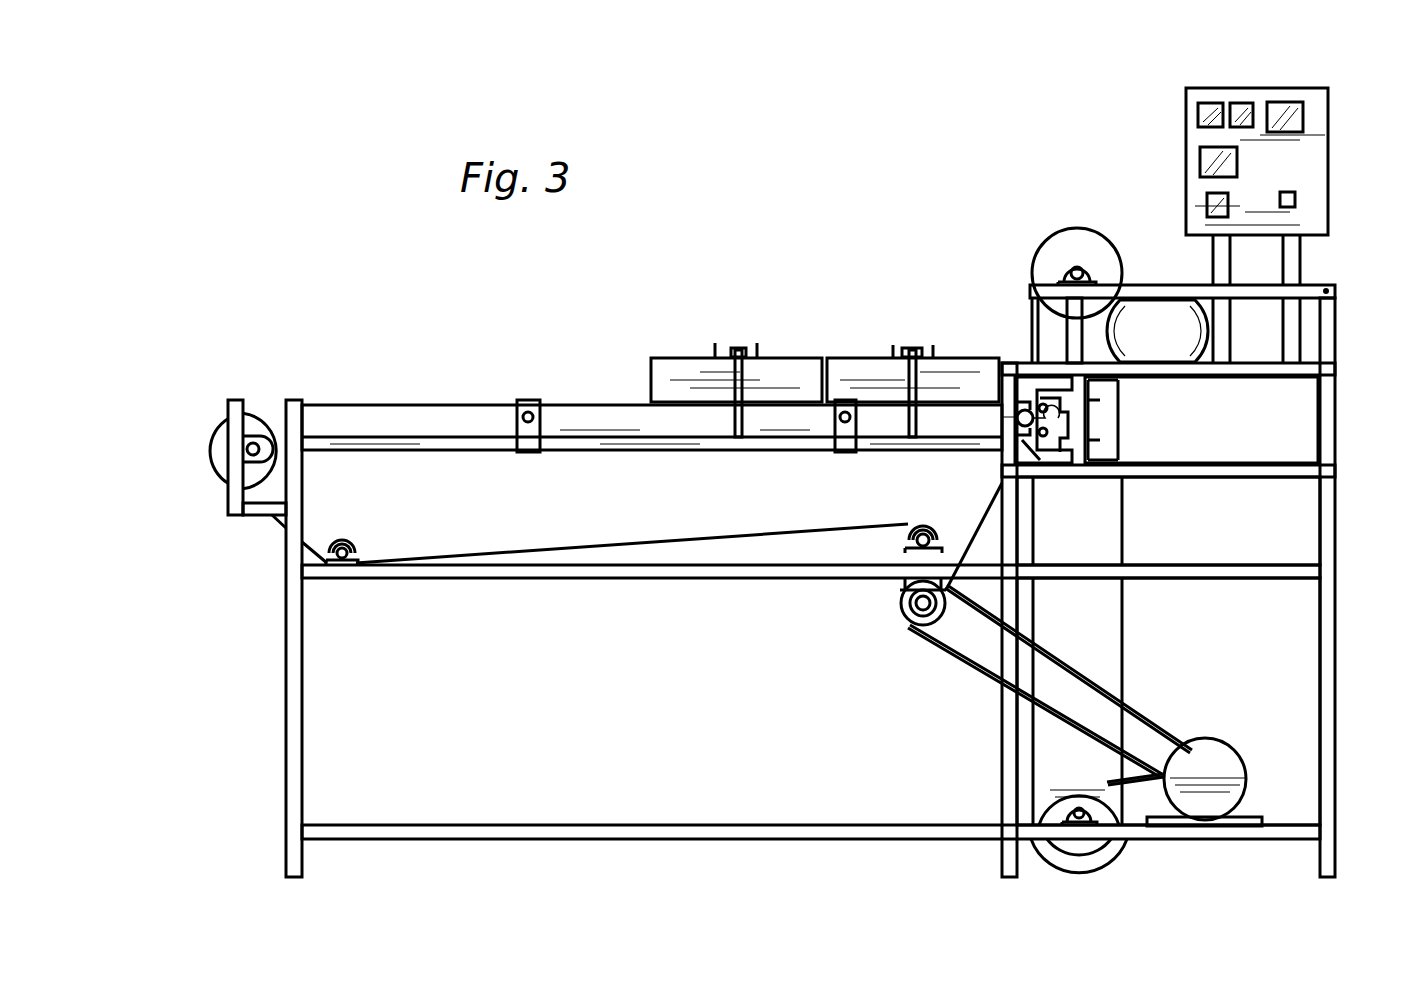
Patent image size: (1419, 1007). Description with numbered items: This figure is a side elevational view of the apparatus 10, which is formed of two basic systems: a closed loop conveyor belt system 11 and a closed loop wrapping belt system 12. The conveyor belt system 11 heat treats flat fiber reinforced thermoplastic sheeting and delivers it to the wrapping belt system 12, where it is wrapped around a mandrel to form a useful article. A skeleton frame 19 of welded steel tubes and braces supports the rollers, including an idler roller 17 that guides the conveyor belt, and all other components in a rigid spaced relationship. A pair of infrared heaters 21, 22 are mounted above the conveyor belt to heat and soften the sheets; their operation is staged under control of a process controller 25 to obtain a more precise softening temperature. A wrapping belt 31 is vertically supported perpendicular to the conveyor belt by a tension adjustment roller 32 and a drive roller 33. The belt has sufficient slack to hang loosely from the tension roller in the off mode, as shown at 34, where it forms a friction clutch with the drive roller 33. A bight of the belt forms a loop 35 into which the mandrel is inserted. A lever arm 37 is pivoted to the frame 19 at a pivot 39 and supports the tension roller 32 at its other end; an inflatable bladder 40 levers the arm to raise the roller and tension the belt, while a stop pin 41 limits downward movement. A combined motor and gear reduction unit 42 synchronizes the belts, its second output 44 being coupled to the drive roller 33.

The apparatus 10 is at (786, 236).
The closed loop conveyor belt system 11 is at (546, 380).
The closed loop wrapping belt system 12 is at (1360, 398).
The idler roller 17 is at (212, 440).
The skeleton frame 19 is at (286, 665).
The infrared heater 21 is at (677, 358).
The infrared heater 22 is at (848, 358).
The process controller 25 is at (1232, 88).
The wrapping belt 31 is at (1122, 538).
The tension adjustment roller 32 is at (1050, 235).
The drive roller 33 is at (1110, 848).
The loosely hanging belt portion 34 is at (1090, 870).
The loop 35 is at (1066, 418).
The lever arm 37 is at (1170, 285).
The pivot 39 is at (1333, 290).
The inflatable bladder 40 is at (1208, 330).
The stop pin 41 is at (1068, 336).
The combined motor and gear reduction unit 42 is at (1205, 740).
The second output 44 is at (1107, 782).